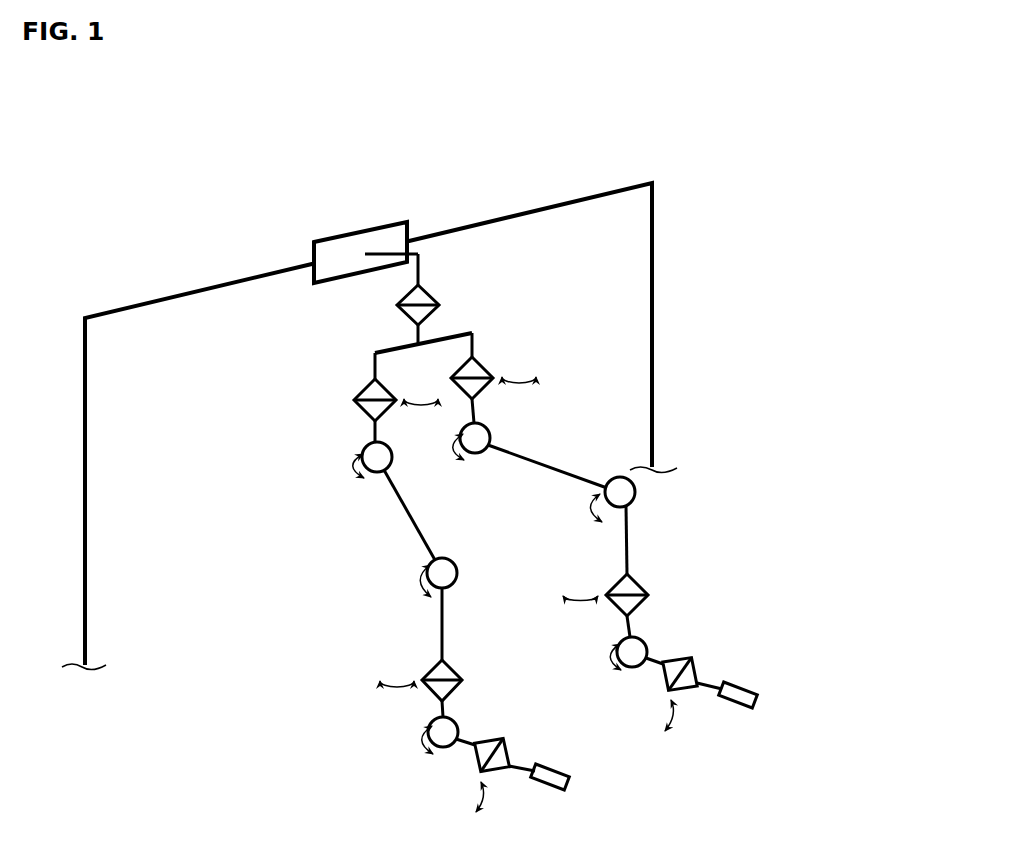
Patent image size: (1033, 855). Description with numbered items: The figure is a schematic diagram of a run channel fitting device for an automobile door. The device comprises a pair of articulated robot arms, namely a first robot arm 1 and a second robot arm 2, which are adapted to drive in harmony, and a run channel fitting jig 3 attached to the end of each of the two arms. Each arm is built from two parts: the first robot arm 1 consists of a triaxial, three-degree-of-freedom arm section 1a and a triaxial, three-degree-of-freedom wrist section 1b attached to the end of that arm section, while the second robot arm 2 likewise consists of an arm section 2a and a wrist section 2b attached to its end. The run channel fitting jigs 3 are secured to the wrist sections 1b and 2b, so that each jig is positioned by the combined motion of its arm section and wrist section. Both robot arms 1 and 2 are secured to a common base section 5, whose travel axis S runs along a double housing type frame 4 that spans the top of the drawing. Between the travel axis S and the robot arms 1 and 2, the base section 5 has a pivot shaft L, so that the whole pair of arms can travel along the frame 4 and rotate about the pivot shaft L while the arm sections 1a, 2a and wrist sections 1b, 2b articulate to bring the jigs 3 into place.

The first robot arm 1 is at (662, 532).
The arm section 1a is at (545, 412).
The wrist section 1b is at (668, 648).
The second robot arm 2 is at (389, 580).
The arm section 2a is at (450, 499).
The wrist section 2b is at (474, 725).
The run channel fitting jig 3 is at (540, 783).
The double housing type frame 4 is at (437, 235).
The base section 5 is at (325, 249).
The pivot shaft L is at (480, 300).
The travel axis S is at (378, 218).